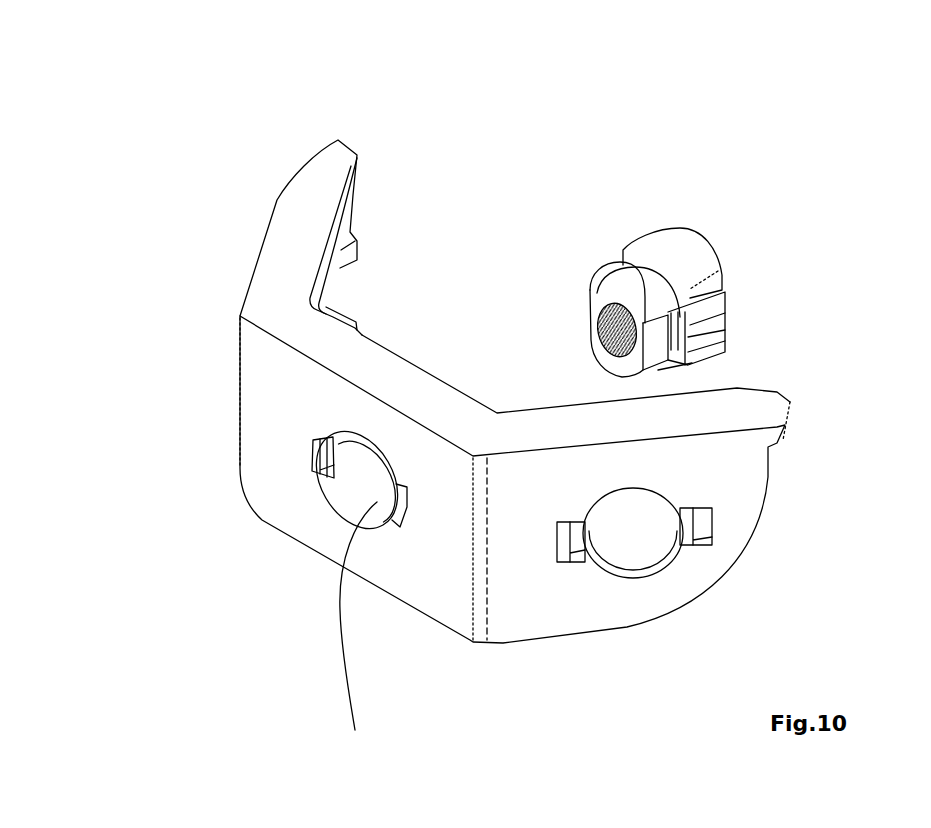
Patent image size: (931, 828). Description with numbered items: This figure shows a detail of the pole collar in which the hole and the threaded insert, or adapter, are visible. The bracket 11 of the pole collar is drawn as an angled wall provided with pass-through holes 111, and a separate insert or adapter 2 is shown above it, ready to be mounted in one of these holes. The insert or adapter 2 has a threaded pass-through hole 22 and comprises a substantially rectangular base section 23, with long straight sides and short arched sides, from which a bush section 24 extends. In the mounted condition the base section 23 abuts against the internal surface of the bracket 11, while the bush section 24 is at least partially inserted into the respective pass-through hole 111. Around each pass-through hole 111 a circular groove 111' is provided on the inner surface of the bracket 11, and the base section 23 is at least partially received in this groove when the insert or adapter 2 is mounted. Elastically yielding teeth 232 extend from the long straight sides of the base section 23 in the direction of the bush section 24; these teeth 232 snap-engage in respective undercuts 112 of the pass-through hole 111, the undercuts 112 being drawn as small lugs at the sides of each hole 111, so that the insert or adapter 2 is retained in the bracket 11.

The insert or adapter 2 is at (679, 245).
The bracket 11 is at (320, 235).
The threaded pass-through hole 22 is at (597, 328).
The base section 23 is at (673, 242).
The bush section 24 is at (625, 285).
The pass-through hole 111 is at (429, 567).
The circular groove 111' is at (358, 633).
The undercuts 112 is at (318, 448).
The elastically yielding teeth 232 is at (739, 319).